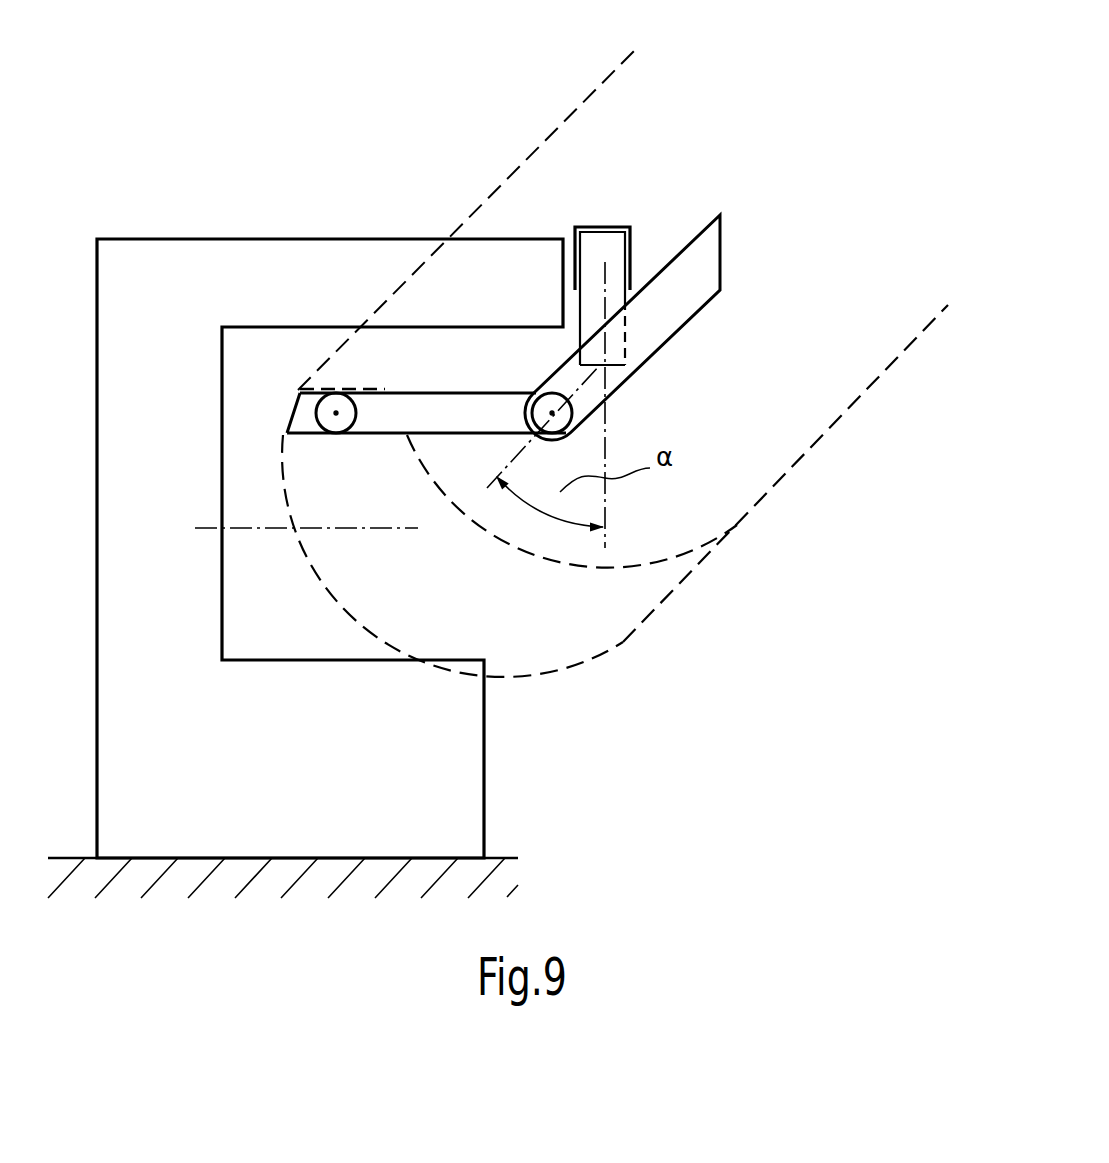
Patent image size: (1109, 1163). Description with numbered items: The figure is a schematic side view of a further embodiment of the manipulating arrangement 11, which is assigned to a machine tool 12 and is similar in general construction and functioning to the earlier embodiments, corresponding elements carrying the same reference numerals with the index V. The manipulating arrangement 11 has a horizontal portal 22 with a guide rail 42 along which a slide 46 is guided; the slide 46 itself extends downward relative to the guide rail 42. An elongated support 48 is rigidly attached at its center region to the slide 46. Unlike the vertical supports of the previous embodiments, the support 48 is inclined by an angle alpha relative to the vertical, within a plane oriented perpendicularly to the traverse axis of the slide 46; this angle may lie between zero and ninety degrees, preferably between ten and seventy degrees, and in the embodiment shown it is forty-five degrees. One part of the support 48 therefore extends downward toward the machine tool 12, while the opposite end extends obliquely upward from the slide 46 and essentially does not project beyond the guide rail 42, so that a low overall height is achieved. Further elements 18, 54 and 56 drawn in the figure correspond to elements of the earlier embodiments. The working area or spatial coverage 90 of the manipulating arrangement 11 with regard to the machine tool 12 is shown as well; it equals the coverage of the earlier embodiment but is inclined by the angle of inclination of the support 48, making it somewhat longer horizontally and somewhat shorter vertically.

The manipulating arrangement 11 is at (708, 170).
The machine tool 12 is at (258, 275).
The axis 18 is at (237, 528).
The horizontal portal 22 is at (578, 224).
The guide rail 42 is at (610, 227).
The slide 46 is at (617, 258).
The support 48 is at (660, 318).
The conveyor belt 54 is at (448, 417).
The belt end 56 is at (306, 410).
The spatial coverage 90 is at (667, 600).